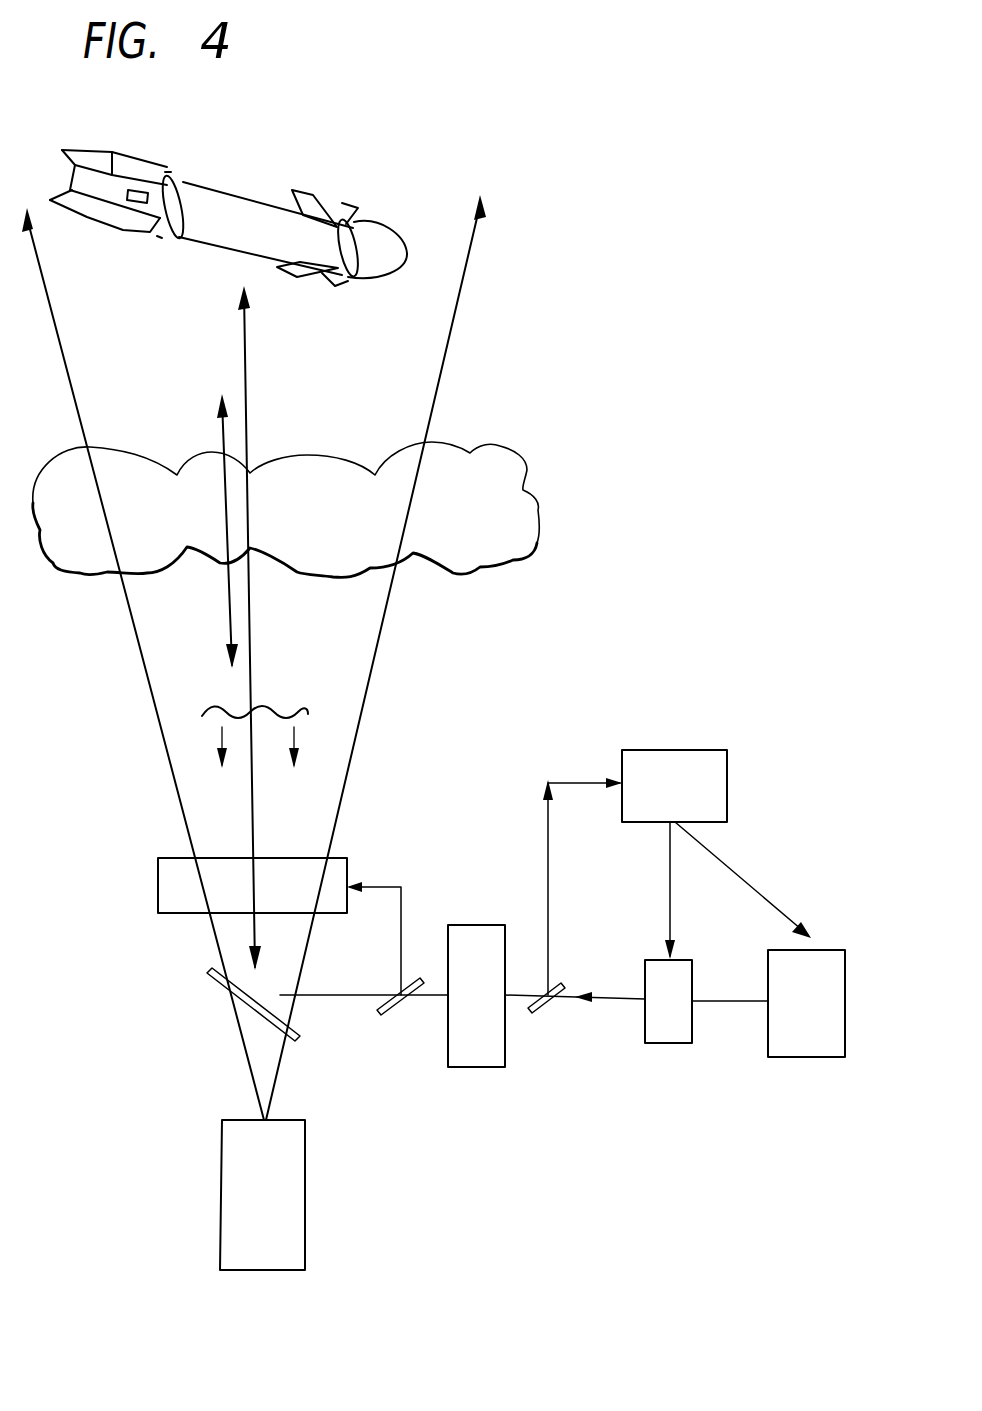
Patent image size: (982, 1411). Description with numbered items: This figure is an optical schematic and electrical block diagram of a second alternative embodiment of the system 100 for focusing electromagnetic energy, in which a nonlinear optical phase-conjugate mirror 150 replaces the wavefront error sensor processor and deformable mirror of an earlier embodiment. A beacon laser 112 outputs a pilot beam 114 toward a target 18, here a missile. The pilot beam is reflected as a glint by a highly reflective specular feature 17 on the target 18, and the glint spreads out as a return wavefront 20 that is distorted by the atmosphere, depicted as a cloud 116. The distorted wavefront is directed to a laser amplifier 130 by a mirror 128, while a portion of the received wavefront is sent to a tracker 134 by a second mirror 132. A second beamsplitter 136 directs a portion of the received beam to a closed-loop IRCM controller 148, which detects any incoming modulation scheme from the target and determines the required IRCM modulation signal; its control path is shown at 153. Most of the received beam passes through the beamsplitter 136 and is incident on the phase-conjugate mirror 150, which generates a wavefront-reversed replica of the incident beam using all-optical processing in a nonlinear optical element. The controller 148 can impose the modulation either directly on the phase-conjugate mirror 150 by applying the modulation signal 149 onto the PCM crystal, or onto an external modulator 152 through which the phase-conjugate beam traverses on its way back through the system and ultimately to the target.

The specular feature 17 is at (386, 246).
The target 18 is at (245, 192).
The return wavefront 20 is at (292, 712).
The laser beam steering system 100 is at (715, 330).
The beacon laser 112 is at (220, 1208).
The pilot beam 114 is at (143, 675).
The cloud 116 is at (540, 512).
The mirror 128 is at (242, 1006).
The laser amplifier 130 is at (468, 1067).
The second mirror 132 is at (390, 1020).
The tracker 134 is at (348, 872).
The second beamsplitter 136 is at (540, 1013).
The closed-loop IRCM controller 148 is at (682, 750).
The modulation signal 149 is at (750, 885).
The phase-conjugate mirror 150 is at (808, 1057).
The external modulator 152 is at (668, 1043).
The control line 153 is at (670, 890).